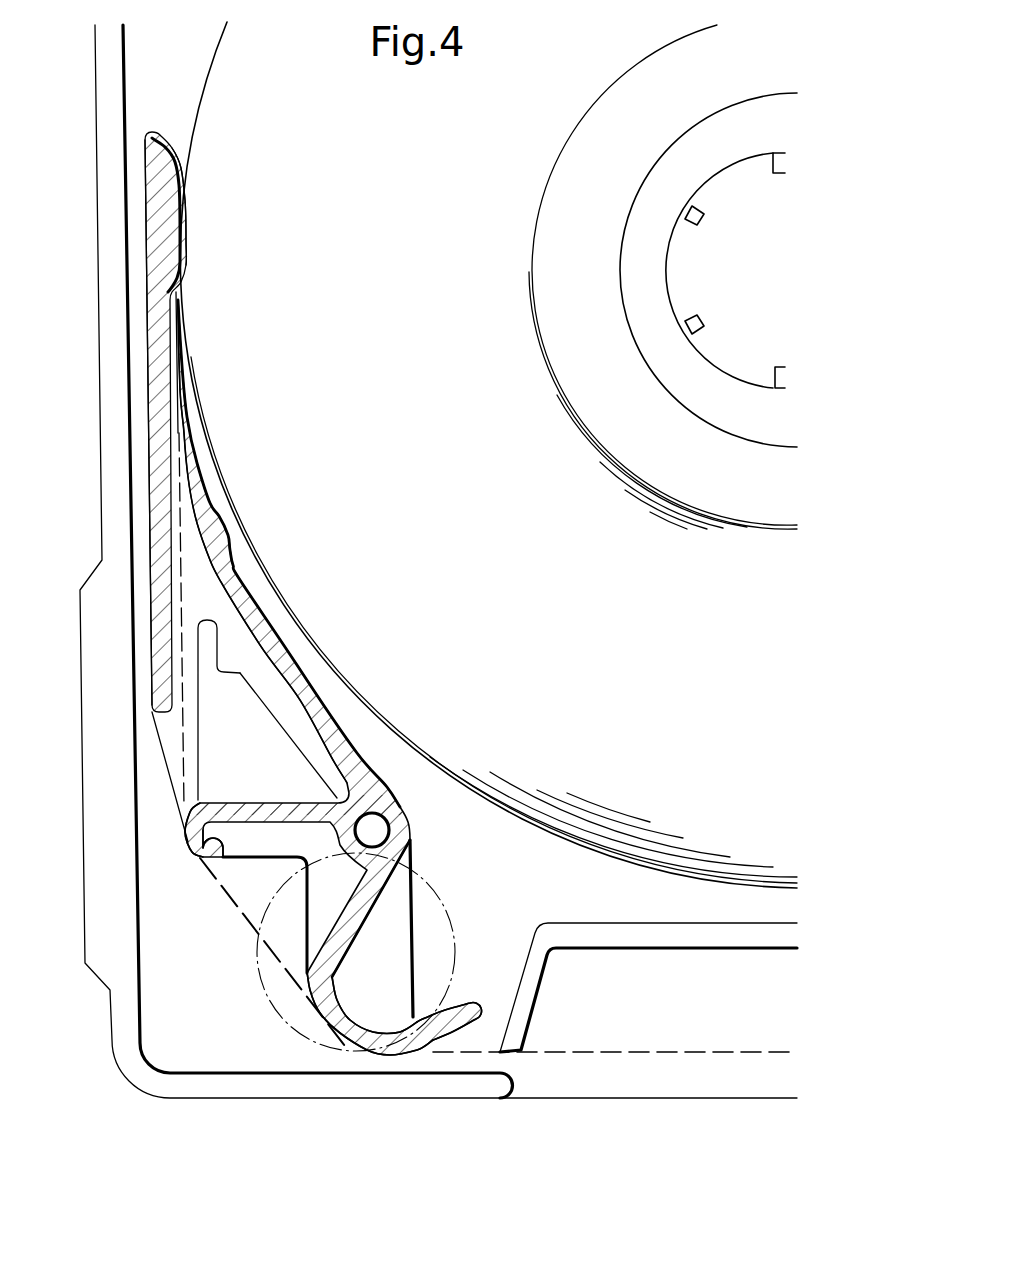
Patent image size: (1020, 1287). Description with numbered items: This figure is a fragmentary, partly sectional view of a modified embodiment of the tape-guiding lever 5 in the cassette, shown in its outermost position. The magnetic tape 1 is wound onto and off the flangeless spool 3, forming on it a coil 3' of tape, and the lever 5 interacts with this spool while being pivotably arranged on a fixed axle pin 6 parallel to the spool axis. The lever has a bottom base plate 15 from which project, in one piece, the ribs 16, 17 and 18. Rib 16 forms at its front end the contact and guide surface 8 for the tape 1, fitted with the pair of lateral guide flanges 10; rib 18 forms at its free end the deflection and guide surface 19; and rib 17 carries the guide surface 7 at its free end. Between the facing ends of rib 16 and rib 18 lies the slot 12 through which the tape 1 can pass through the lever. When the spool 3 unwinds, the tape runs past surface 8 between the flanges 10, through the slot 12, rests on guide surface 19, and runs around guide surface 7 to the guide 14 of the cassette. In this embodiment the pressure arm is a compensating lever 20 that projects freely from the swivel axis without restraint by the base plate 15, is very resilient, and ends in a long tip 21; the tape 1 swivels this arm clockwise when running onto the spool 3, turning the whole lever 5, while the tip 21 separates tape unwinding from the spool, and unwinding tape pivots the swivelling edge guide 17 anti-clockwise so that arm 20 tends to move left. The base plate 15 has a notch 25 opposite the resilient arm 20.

The magnetic tape 1 is at (643, 1055).
The spool 3 is at (663, 277).
The coil 3' is at (477, 455).
The lever 5 is at (150, 549).
The axle pin 6 is at (376, 828).
The guide surface 7 is at (340, 1040).
The contact and guide surface 8 is at (172, 214).
The lateral guide flanges 10 is at (183, 235).
The slot 12 is at (172, 733).
The guide 14 is at (515, 1033).
The base plate 15 is at (272, 757).
The rib 16 is at (160, 412).
The rib 17 is at (327, 1012).
The rib 18 is at (297, 806).
The deflection and guide surface 19 is at (194, 842).
The compensating lever 20 is at (250, 626).
The tip 21 is at (183, 362).
The notch 25 is at (230, 664).